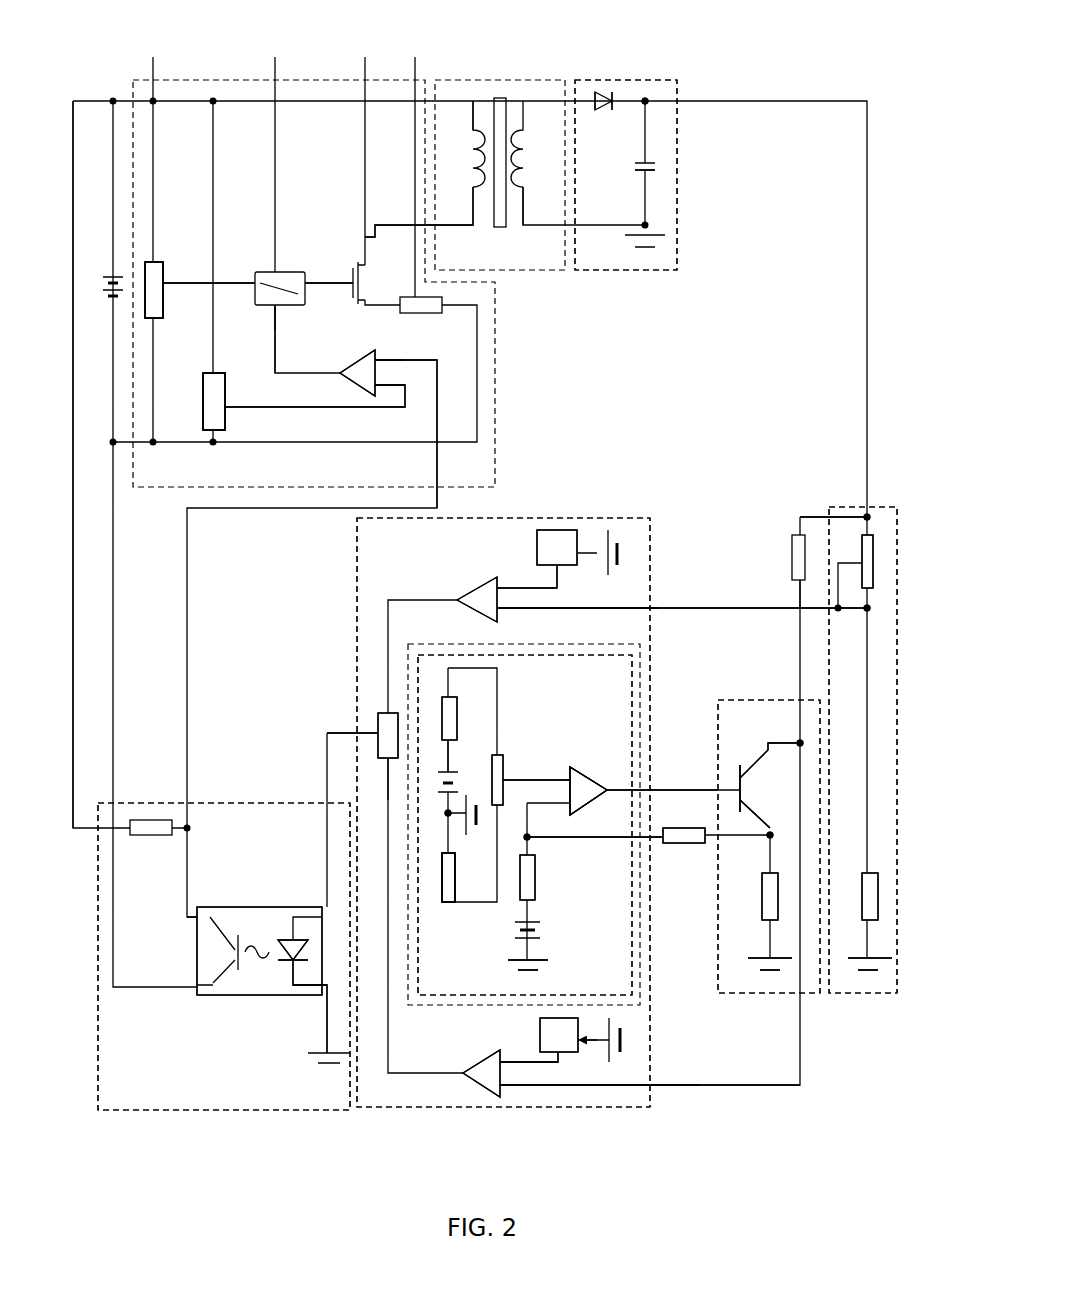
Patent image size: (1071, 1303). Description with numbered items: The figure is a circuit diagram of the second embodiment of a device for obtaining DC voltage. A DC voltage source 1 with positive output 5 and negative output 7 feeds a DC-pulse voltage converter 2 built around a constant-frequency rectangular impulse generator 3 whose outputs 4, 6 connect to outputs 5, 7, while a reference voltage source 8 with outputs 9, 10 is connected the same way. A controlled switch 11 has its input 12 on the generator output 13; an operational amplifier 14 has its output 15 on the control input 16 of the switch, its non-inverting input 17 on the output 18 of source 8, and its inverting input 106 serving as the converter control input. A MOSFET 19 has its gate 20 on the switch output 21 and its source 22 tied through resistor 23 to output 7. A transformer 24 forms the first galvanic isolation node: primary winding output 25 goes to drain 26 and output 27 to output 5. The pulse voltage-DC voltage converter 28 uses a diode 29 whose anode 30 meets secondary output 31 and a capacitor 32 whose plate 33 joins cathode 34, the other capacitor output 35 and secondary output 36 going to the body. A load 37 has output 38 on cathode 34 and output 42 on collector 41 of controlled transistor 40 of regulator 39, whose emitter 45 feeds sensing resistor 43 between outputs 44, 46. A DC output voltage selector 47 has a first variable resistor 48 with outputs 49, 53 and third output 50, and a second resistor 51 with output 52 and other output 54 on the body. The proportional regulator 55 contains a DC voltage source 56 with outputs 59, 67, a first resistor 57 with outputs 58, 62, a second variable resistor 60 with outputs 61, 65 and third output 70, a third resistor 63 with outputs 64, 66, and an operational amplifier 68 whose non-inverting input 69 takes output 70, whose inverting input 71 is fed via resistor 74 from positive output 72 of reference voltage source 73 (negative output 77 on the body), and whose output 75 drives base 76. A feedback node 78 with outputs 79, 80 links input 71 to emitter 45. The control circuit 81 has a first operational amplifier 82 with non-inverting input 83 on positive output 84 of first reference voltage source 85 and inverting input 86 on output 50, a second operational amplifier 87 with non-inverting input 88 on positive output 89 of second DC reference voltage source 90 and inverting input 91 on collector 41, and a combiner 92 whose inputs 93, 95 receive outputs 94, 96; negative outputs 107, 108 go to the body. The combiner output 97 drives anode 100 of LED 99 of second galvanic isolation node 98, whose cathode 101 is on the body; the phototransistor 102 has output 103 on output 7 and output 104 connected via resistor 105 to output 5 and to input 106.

The DC voltage source 1 is at (113, 275).
The DC-pulse voltage converter 2 is at (136, 57).
The constant-frequency rectangular impulse generator 3 is at (150, 263).
The output of the impulse generator 4 is at (153, 263).
The positive output of the DC voltage source 5 is at (111, 277).
The output of the impulse generator 6 is at (152, 318).
The negative output of the DC voltage source 7 is at (113, 302).
The reference voltage source 8 is at (215, 373).
The output of the reference voltage source 9 is at (215, 373).
The output of the reference voltage source 10 is at (205, 428).
The controlled switch 11 is at (280, 57).
The input of the controlled switch 12 is at (254, 273).
The output of the pulse generator 13 is at (163, 288).
The operational amplifier 14 is at (343, 373).
The output of the operational amplifier 15 is at (338, 374).
The control input of the controlled switch 16 is at (276, 307).
The non-inverting input of the operational amplifier 17 is at (386, 384).
The output of the reference voltage source 18 is at (227, 405).
The MOSFET 19 is at (367, 57).
The gate of the MOSFET 20 is at (350, 266).
The output of the controlled switch 21 is at (306, 281).
The source of the MOSFET 22 is at (371, 303).
The resistor 23 is at (420, 57).
The transformer 24 is at (495, 98).
The output of the primary winding 25 is at (473, 208).
The drain of the MOSFET 26 is at (375, 225).
The output of the primary winding 27 is at (473, 128).
The pulse voltage-DC voltage converter 28 is at (583, 87).
The diode 29 is at (600, 97).
The anode of the diode 30 is at (596, 104).
The output of the secondary winding 31 is at (523, 128).
The capacitor 32 is at (647, 101).
The plate of the capacitor 33 is at (645, 162).
The cathode of the diode 34 is at (614, 103).
The output of the capacitor 35 is at (645, 175).
The output of the secondary winding 36 is at (523, 208).
The load 37 is at (810, 517).
The output of the load 38 is at (797, 534).
The regulator 39 is at (812, 935).
The controlled transistor 40 is at (742, 790).
The collector of the transistor 41 is at (798, 742).
The output of the load 42 is at (800, 585).
The sensing resistor 43 is at (777, 897).
The output of the sensing resistor 44 is at (767, 870).
The emitter of the transistor 45 is at (771, 828).
The output of the sensing resistor 46 is at (763, 930).
The DC output voltage selector 47 is at (888, 575).
The first variable resistor 48 is at (870, 552).
The output of the first variable resistor 49 is at (869, 517).
The third output of the first variable resistor 50 is at (860, 562).
The second resistor 51 is at (871, 900).
The output of the second resistor 52 is at (868, 868).
The output of the first variable resistor 53 is at (869, 608).
The ground 54 is at (865, 930).
The proportional regulator 55 is at (427, 668).
The DC voltage source 56 is at (447, 795).
The first resistor 57 is at (442, 699).
The output of the first resistor 58 is at (455, 755).
The positive output of the DC voltage source 59 is at (445, 775).
The second variable resistor 60 is at (495, 795).
The output of the second variable resistor 61 is at (498, 748).
The output of the first resistor 62 is at (450, 698).
The third resistor 63 is at (450, 862).
The output of the third resistor 64 is at (450, 903).
The output of the second variable resistor 65 is at (500, 827).
The output of the third resistor 66 is at (452, 855).
The negative output of the DC voltage source 67 is at (449, 810).
The operational amplifier 68 is at (560, 813).
The non-inverting input of the operational amplifier 69 is at (568, 770).
The third output of the second variable resistor 70 is at (504, 781).
The inverting input of the operational amplifier 71 is at (532, 836).
The positive output of the reference voltage source 72 is at (518, 920).
The reference voltage source 73 is at (540, 935).
The resistor 74 is at (535, 900).
The output of the operational amplifier 75 is at (597, 790).
The base of the controlled transistor 76 is at (740, 782).
The negative output of the reference voltage source 77 is at (518, 950).
The feedback node 78 is at (665, 840).
The output of the feedback node 79 is at (658, 835).
The output of the feedback node 80 is at (705, 843).
The control circuit 81 is at (537, 536).
The first operational amplifier 82 is at (470, 598).
The non-inverting input of the first operational amplifier 83 is at (504, 586).
The positive output of the first reference voltage source 84 is at (554, 566).
The first reference voltage source 85 is at (535, 542).
The inverting input of the first operational amplifier 86 is at (507, 609).
The second operational amplifier 87 is at (468, 1080).
The non-inverting input of the second operational amplifier 88 is at (507, 1060).
The positive output of the second reference voltage source 89 is at (560, 1052).
The second DC reference voltage source 90 is at (550, 1040).
The inverting input of the second operational amplifier 91 is at (508, 1087).
The combiner 92 is at (377, 722).
The first input of the combiner 93 is at (388, 713).
The output of the first operational amplifier 94 is at (467, 590).
The second input of the combiner 95 is at (386, 768).
The output of the second operational amplifier 96 is at (465, 1073).
The output of the combiner 97 is at (378, 740).
The second galvanic isolation node 98 is at (240, 1095).
The semiconducting LED 99 is at (282, 960).
The anode of the LED 100 is at (323, 909).
The cathode of the LED 101 is at (320, 996).
The phototransistor 102 is at (238, 955).
The output of the phototransistor 103 is at (198, 983).
The output of the phototransistor 104 is at (188, 915).
The resistor 105 is at (73, 834).
The inverting input of the operational amplifier 106 is at (387, 359).
The negative output of the first reference voltage source 107 is at (579, 560).
The negative output of the second reference voltage source 108 is at (580, 1043).